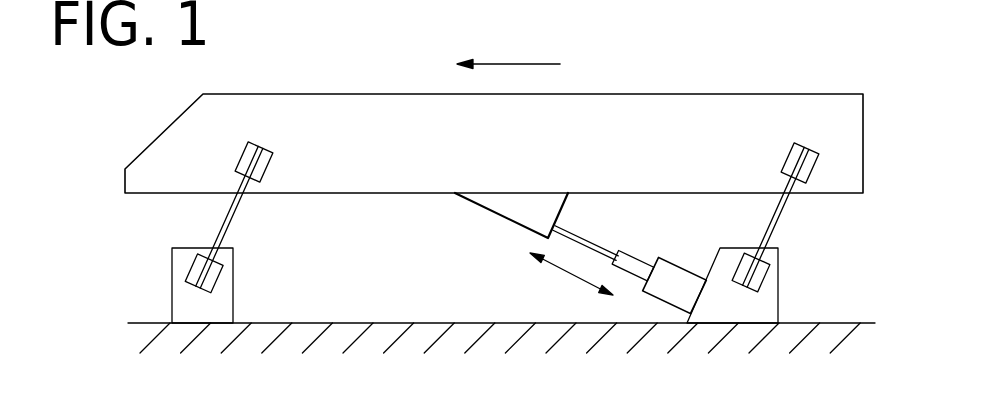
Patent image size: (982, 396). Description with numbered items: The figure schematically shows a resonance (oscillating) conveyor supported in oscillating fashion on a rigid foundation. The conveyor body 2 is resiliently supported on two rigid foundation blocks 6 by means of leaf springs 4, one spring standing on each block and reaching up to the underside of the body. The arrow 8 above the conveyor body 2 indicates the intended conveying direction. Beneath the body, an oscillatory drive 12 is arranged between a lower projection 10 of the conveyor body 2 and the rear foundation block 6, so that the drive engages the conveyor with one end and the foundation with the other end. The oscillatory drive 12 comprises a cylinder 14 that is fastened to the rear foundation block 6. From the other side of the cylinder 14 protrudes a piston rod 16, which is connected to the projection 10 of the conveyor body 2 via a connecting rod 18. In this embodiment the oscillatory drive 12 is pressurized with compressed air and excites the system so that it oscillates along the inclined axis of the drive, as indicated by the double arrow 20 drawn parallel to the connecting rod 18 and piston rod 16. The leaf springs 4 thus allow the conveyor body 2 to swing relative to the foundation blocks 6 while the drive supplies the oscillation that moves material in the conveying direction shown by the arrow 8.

The conveyor body 2 is at (363, 115).
The leaf springs 4 is at (233, 218).
The foundation blocks 6 is at (222, 305).
The arrow 8 is at (518, 64).
The lower projection 10 is at (508, 212).
The oscillatory drive 12 is at (629, 224).
The cylinder 14 is at (673, 273).
The piston rod 16 is at (633, 257).
The connecting rod 18 is at (592, 237).
The double arrow 20 is at (567, 273).